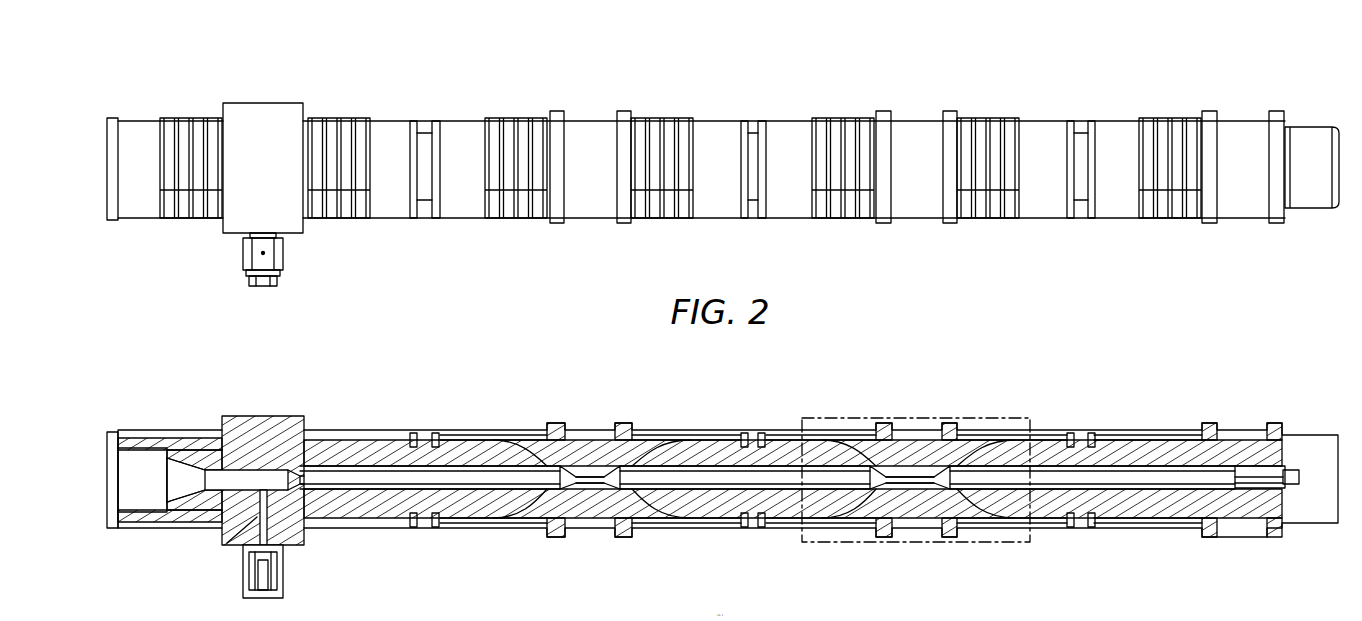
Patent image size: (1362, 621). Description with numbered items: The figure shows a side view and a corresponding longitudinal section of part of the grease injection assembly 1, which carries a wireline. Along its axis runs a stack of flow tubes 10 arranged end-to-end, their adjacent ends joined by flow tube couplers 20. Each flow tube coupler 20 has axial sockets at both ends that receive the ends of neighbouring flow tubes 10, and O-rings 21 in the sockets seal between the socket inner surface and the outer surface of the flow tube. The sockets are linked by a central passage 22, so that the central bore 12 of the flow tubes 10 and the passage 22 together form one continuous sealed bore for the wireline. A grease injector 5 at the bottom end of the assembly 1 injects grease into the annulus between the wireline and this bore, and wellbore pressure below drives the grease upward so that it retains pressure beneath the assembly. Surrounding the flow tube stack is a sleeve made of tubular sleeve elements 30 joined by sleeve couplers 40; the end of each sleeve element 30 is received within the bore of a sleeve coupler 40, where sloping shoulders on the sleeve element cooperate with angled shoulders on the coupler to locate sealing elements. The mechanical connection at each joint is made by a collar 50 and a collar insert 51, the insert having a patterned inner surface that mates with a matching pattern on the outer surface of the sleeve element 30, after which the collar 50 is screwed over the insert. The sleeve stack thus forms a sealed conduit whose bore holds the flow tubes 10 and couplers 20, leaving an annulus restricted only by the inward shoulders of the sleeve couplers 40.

In FIG. 2, the grease injection assembly 1 is at (1294, 58).
In FIG. 3, the grease injection assembly 1 is at (1294, 379).
In FIG. 2, the grease injector 5 is at (262, 113).
In FIG. 3, the grease injector 5 is at (234, 551).
In FIG. 3, the flow tube 10 is at (424, 488).
In FIG. 3, the central bore 12 is at (338, 490).
In FIG. 3, the flow tube coupler 20 is at (598, 484).
In FIG. 3, the O-ring 21 is at (548, 466).
In FIG. 3, the central passage 22 is at (584, 480).
In FIG. 2, the sleeve element 30 is at (426, 207).
In FIG. 3, the sleeve element 30 is at (422, 455).
In FIG. 2, the sleeve coupler 40 is at (587, 207).
In FIG. 3, the sleeve coupler 40 is at (590, 447).
In FIG. 2, the collar 50 is at (390, 207).
In FIG. 3, the collar 50 is at (692, 522).
In FIG. 3, the collar insert 51 is at (380, 520).